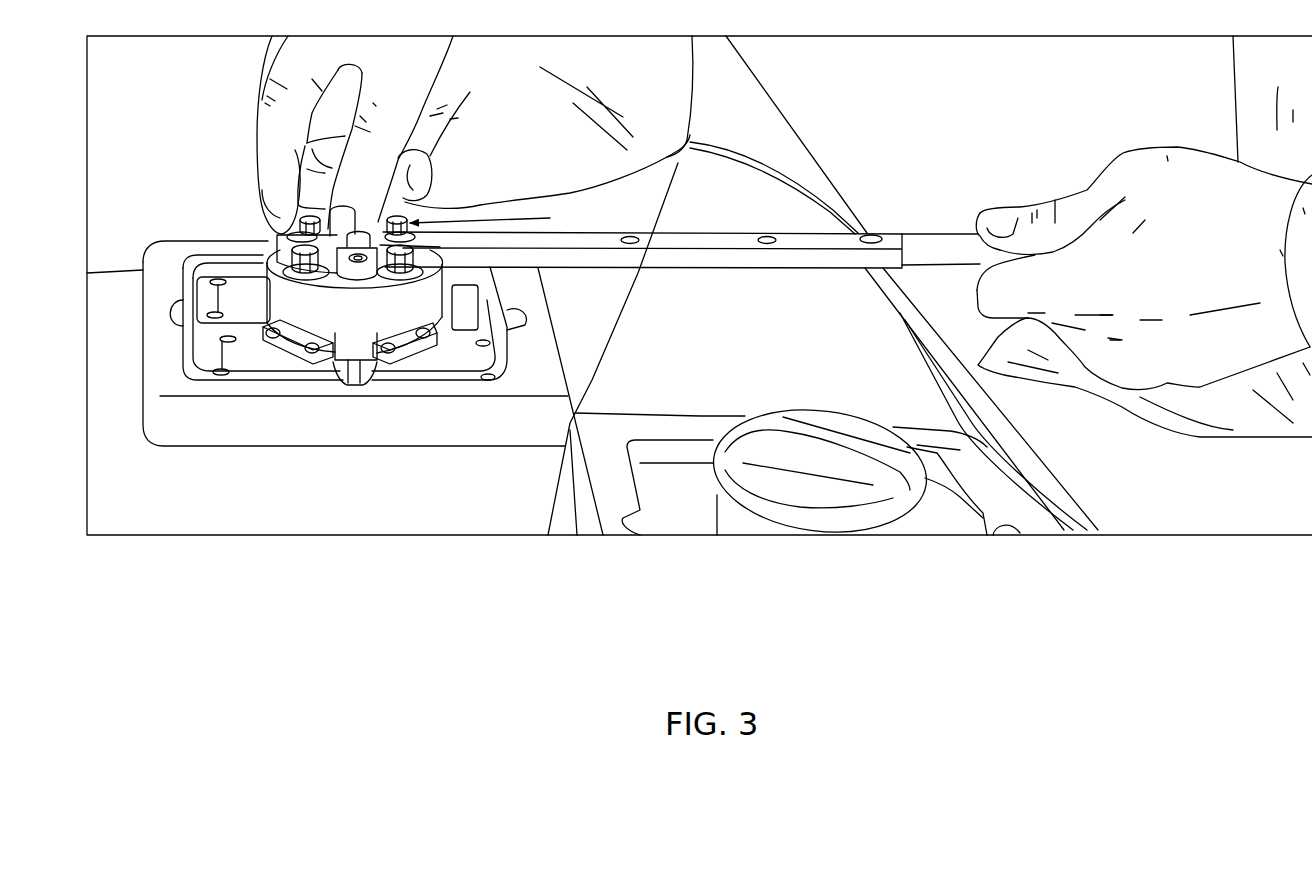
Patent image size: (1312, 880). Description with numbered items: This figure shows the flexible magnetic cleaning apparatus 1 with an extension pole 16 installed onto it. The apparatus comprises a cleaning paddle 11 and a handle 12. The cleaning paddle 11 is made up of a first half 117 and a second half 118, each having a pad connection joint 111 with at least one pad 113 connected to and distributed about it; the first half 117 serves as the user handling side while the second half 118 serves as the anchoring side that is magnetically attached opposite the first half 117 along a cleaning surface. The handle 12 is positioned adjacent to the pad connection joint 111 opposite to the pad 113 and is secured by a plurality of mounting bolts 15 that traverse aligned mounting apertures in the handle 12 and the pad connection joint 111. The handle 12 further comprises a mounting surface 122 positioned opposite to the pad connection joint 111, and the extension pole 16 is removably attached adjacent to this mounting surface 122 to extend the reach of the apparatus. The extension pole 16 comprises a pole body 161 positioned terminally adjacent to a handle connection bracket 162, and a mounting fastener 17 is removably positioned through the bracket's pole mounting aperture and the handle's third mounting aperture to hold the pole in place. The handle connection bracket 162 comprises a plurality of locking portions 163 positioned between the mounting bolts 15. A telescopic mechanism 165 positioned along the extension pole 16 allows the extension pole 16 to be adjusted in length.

The flexible magnetic cleaning apparatus 1 is at (875, 111).
The cleaning paddle 11 is at (570, 316).
The handle 12 is at (380, 327).
The mounting bolts 15 is at (300, 278).
The extension pole 16 is at (873, 214).
The mounting fastener 17 is at (436, 176).
The pad connection joint 111 is at (419, 359).
The pad 113 is at (274, 366).
The first half 117 is at (264, 460).
The second half 118 is at (547, 508).
The mounting surface 122 is at (266, 252).
The pole body 161 is at (790, 270).
The handle connection bracket 162 is at (276, 232).
The locking portions 163 is at (293, 210).
The telescopic mechanism 165 is at (885, 226).